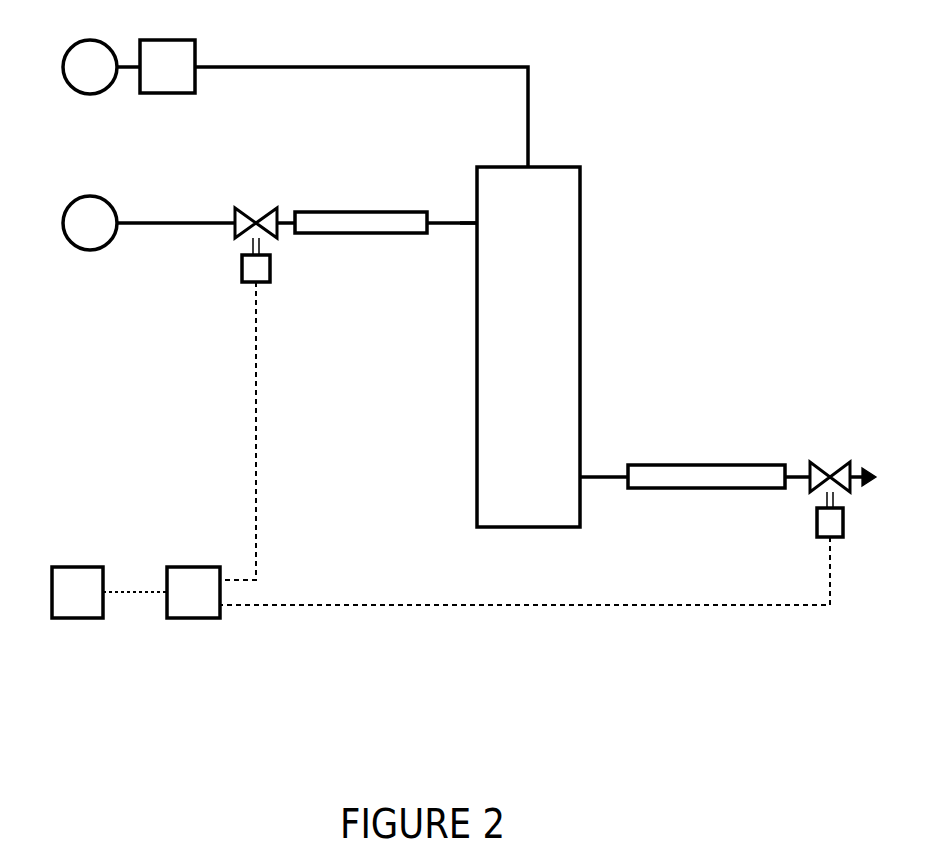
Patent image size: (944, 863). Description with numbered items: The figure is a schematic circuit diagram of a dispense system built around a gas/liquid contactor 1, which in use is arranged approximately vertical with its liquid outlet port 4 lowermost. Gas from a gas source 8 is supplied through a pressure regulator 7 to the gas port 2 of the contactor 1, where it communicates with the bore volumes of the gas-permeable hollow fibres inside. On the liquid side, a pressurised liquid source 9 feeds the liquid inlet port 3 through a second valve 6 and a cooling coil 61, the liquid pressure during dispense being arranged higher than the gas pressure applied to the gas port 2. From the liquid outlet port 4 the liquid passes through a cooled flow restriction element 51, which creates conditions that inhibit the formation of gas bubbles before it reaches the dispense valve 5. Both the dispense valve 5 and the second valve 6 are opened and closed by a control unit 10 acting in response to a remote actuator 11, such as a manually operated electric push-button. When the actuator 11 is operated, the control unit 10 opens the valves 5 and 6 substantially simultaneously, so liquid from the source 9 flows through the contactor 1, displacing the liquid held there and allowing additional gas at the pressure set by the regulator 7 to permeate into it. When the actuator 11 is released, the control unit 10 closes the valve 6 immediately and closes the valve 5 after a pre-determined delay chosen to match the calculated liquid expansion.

The gas/liquid contactor 1 is at (528, 347).
The gas port 2 is at (532, 165).
The liquid inlet port 3 is at (472, 223).
The liquid outlet port 4 is at (585, 480).
The dispense valve 5 is at (835, 497).
The second valve 6 is at (247, 210).
The pressure regulator 7 is at (193, 38).
The gas source 8 is at (107, 88).
The pressurised liquid source 9 is at (112, 245).
The control unit 10 is at (212, 622).
The remote actuator 11 is at (85, 565).
The cooled flow restriction element 51 is at (752, 465).
The cooling coil 61 is at (397, 212).